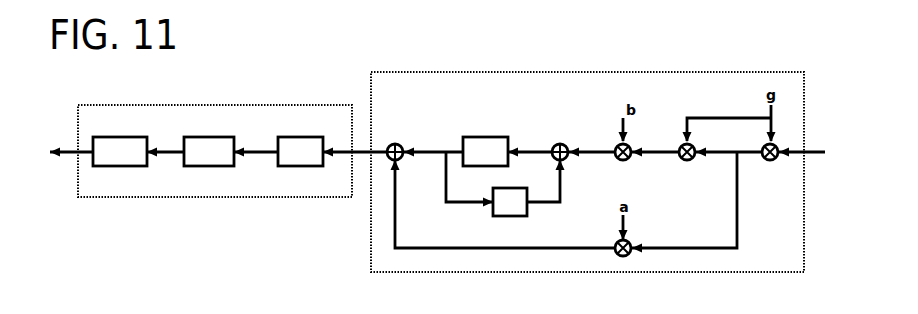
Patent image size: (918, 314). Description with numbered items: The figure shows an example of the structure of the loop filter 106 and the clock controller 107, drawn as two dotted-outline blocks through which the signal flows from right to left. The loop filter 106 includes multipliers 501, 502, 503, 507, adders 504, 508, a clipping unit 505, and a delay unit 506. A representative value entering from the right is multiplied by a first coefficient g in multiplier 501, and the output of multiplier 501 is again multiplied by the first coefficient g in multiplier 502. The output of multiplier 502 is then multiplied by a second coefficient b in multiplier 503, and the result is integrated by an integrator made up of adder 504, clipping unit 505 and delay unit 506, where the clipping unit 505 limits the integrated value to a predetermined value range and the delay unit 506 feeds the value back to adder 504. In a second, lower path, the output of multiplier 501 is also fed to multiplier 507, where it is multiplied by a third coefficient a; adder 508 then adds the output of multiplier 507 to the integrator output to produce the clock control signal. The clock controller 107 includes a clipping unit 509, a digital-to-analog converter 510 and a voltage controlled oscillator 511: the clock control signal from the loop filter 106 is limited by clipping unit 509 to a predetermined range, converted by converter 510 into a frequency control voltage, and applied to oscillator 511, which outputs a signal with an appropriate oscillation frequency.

The loop filter 106 is at (533, 272).
The clock controller 107 is at (200, 198).
The multiplier 501 is at (765, 160).
The multiplier 502 is at (684, 160).
The multiplier 503 is at (620, 160).
The adder 504 is at (557, 142).
The clipping unit 505 is at (482, 137).
The delay unit 506 is at (525, 216).
The multiplier 507 is at (622, 257).
The adder 508 is at (398, 142).
The clipping unit 509 is at (290, 137).
The digital-to-analog (D/A) converter 510 is at (204, 137).
The voltage controlled oscillator 511 is at (110, 137).